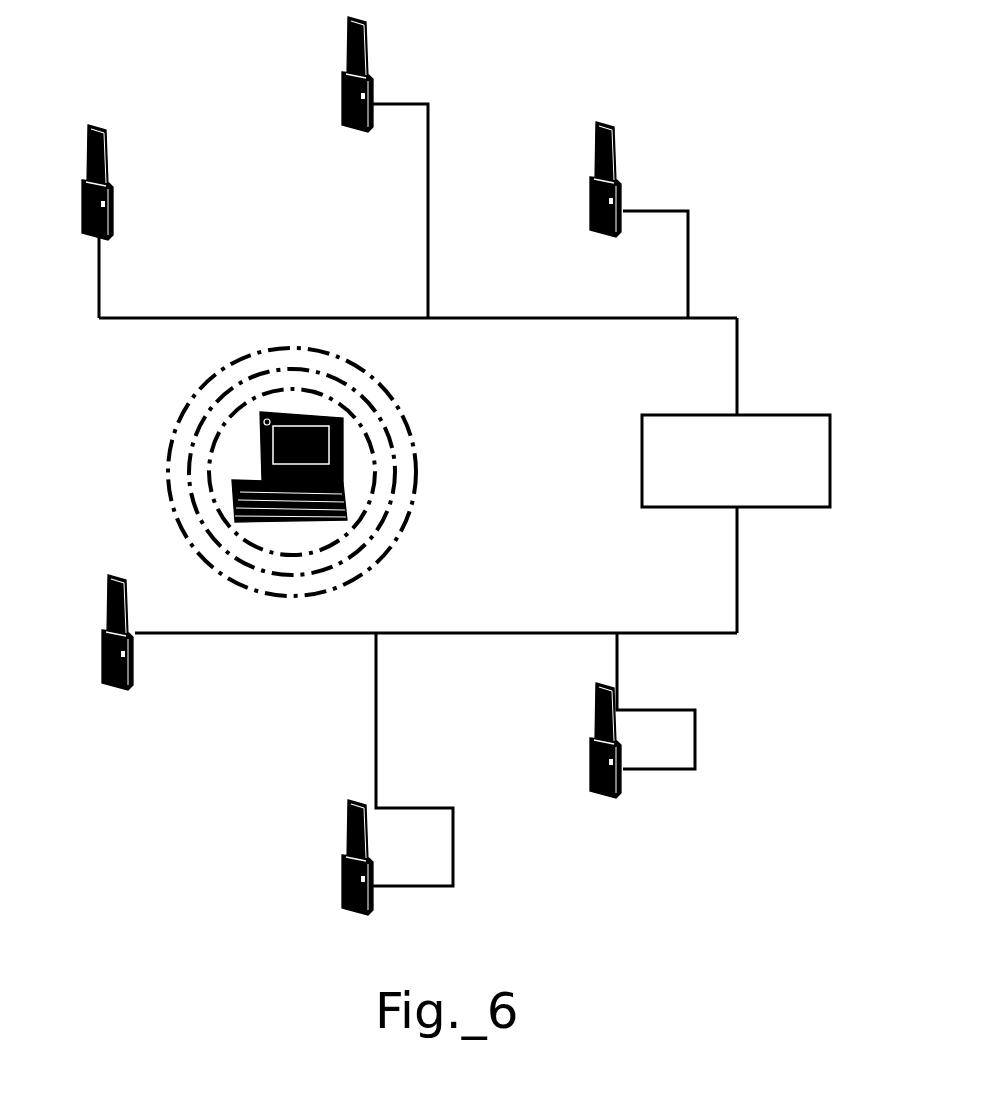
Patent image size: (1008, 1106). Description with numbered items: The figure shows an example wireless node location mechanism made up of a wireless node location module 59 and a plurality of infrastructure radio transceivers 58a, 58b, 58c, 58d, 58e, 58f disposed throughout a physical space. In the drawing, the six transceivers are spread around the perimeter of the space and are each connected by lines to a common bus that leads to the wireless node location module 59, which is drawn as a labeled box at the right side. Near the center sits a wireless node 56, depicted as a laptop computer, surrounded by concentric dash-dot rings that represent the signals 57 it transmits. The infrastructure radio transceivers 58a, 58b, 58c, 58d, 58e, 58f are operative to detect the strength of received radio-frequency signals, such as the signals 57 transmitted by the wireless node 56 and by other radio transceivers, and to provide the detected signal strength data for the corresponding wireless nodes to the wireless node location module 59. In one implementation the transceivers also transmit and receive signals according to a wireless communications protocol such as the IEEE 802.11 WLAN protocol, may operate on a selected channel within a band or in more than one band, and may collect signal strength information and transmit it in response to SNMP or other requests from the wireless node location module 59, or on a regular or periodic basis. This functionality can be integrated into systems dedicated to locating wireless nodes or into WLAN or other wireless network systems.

The wireless node 56 is at (288, 520).
The signals 57 is at (387, 425).
The infrastructure radio transceiver 58a is at (113, 181).
The infrastructure radio transceiver 58b is at (373, 75).
The infrastructure radio transceiver 58c is at (623, 182).
The infrastructure radio transceiver 58d is at (592, 770).
The infrastructure radio transceiver 58e is at (343, 857).
The infrastructure radio transceiver 58f is at (103, 632).
The wireless node location module 59 is at (833, 460).